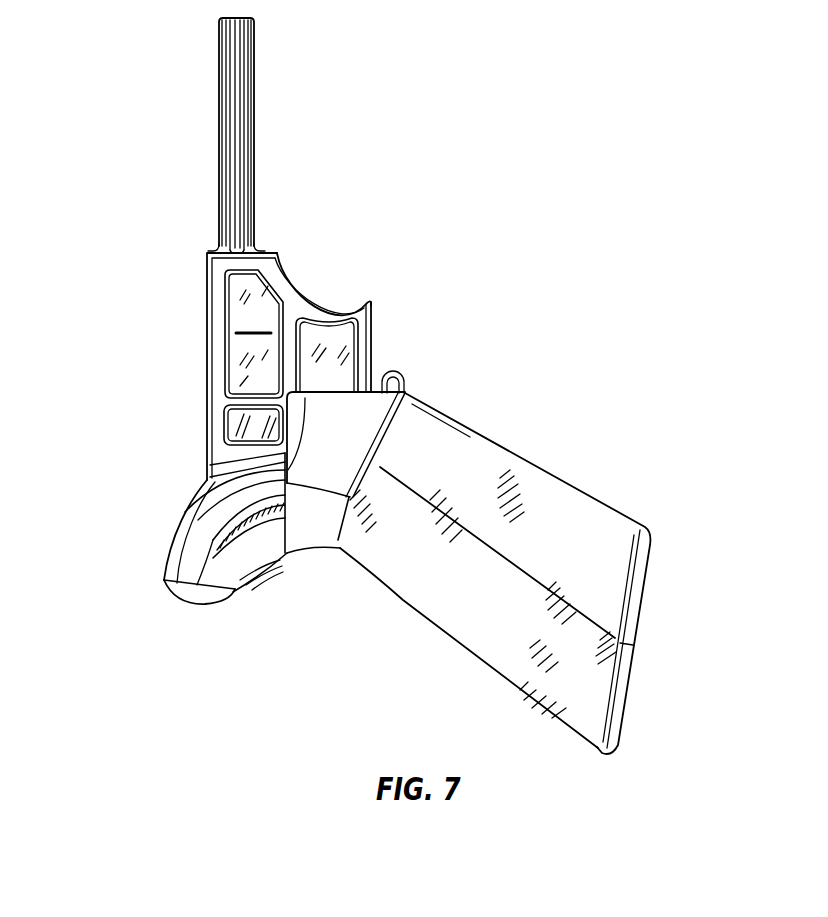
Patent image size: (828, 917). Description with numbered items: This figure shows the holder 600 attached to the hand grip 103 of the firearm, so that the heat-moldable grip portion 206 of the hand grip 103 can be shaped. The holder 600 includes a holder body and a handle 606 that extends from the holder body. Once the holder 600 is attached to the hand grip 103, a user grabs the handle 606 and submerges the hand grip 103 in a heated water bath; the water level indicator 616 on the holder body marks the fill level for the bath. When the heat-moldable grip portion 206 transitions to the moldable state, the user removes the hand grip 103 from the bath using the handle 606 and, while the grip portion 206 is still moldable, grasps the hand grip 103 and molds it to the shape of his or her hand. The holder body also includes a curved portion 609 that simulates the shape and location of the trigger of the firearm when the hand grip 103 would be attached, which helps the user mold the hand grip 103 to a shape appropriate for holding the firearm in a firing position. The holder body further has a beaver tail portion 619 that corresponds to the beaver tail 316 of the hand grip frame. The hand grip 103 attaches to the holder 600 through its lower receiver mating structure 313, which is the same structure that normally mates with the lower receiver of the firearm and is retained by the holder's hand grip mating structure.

The handle 606 is at (219, 103).
The holder 600 is at (496, 201).
The curved portion 609 is at (380, 284).
The water level indicator 616 is at (242, 336).
The beaver tail portion 619 is at (178, 553).
The beaver tail 316 is at (254, 553).
The lower receiver mating structure 313 is at (324, 458).
The hand grip 103 is at (556, 428).
The heat-moldable grip portion 206 is at (472, 628).